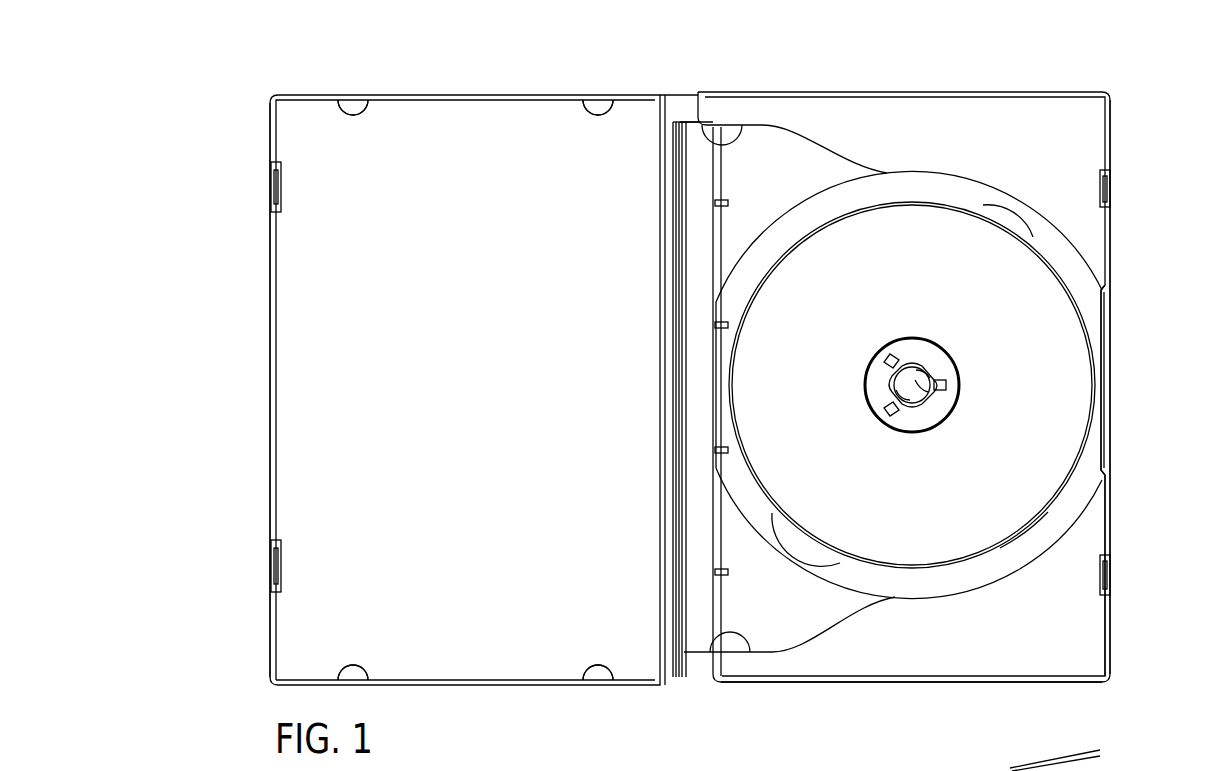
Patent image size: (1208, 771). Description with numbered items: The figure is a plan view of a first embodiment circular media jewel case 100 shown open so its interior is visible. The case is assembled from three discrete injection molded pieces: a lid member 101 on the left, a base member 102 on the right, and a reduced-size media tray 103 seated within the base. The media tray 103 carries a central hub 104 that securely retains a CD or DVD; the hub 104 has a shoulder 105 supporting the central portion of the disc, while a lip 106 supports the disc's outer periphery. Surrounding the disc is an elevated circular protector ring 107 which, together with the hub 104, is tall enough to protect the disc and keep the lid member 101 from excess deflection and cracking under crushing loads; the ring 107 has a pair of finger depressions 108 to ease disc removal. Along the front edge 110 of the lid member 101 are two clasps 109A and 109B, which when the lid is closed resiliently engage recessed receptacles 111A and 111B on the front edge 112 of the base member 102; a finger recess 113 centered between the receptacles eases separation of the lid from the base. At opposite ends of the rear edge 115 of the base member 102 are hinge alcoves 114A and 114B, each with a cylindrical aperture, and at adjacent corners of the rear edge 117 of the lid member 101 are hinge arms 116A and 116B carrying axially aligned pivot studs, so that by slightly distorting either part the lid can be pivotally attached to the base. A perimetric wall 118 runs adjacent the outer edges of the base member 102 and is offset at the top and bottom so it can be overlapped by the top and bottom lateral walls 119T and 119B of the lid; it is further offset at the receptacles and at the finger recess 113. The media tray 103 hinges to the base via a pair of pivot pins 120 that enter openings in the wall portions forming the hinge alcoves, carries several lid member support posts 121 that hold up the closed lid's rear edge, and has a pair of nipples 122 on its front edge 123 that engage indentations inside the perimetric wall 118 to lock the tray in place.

The circular media jewel case 100 is at (253, 93).
The lid member 101 is at (488, 399).
The base member 102 is at (1036, 148).
The media tray 103 is at (931, 502).
The hub 104 is at (928, 370).
The shoulder 105 is at (956, 365).
The lip 106 is at (1048, 512).
The elevated circular protector ring 107 is at (1013, 557).
The finger depressions 108 is at (1020, 220).
The clasp 109A is at (273, 204).
The clasp 109B is at (273, 580).
The front edge 110 is at (258, 410).
The recessed receptacle 111A is at (1118, 182).
The recessed receptacle 111B is at (1118, 573).
The front edge 112 is at (1124, 380).
The finger recess 113 is at (1116, 438).
The hinge alcove 114A is at (696, 91).
The hinge alcove 114B is at (709, 682).
The rear edge 115 is at (662, 473).
The hinge arm 116A is at (664, 114).
The hinge arm 116B is at (697, 669).
The rear edge 117 is at (684, 178).
The perimetric wall 118 is at (997, 677).
The top lateral wall 119T is at (408, 97).
The bottom lateral wall 119B is at (418, 688).
The pivot pins 120 is at (730, 140).
The lid member support posts 121 is at (715, 450).
The nipples 122 is at (1103, 291).
The front edge 123 is at (1110, 331).